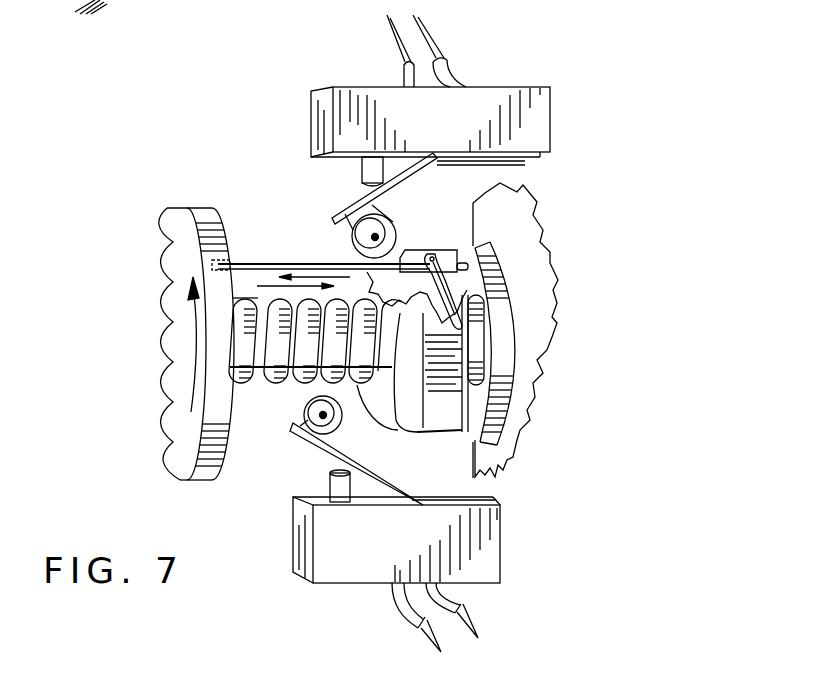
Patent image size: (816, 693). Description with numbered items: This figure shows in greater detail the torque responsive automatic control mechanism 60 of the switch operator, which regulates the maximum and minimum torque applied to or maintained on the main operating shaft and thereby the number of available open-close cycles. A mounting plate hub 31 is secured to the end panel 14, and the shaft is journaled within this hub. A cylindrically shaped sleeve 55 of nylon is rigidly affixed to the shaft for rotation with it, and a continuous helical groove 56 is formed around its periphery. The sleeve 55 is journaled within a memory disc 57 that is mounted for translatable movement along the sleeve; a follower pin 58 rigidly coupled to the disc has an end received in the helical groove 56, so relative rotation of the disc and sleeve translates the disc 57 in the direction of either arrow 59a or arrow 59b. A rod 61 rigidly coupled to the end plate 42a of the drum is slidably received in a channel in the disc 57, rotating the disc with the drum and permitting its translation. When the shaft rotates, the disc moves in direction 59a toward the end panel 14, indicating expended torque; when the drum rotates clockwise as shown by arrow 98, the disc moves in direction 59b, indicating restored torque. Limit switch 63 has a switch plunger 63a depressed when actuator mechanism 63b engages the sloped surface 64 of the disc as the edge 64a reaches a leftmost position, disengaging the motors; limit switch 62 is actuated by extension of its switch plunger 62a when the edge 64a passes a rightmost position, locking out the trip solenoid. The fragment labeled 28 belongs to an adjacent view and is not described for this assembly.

The automatic control mechanism 60 is at (582, 212).
The arrow 98 is at (168, 367).
The end plate 42a is at (194, 212).
The cylindrically shaped sleeve 55 is at (230, 258).
The rod 61 is at (247, 300).
The arrow 59a is at (263, 263).
The arrow 59b is at (345, 266).
The helical groove 56 is at (287, 388).
The sloped surface 64 is at (394, 410).
The edge 64a is at (473, 455).
The follower pin 58 is at (432, 262).
The memory disc 57 is at (473, 445).
The hub 31 is at (513, 348).
The end panel 14 is at (520, 265).
The limit switch 62 is at (452, 127).
The switch plunger 62a is at (367, 166).
The limit switch 63 is at (417, 557).
The switch plunger 63a is at (352, 490).
The actuator mechanism 63b is at (300, 427).
The adjacent element 28 is at (148, 0).